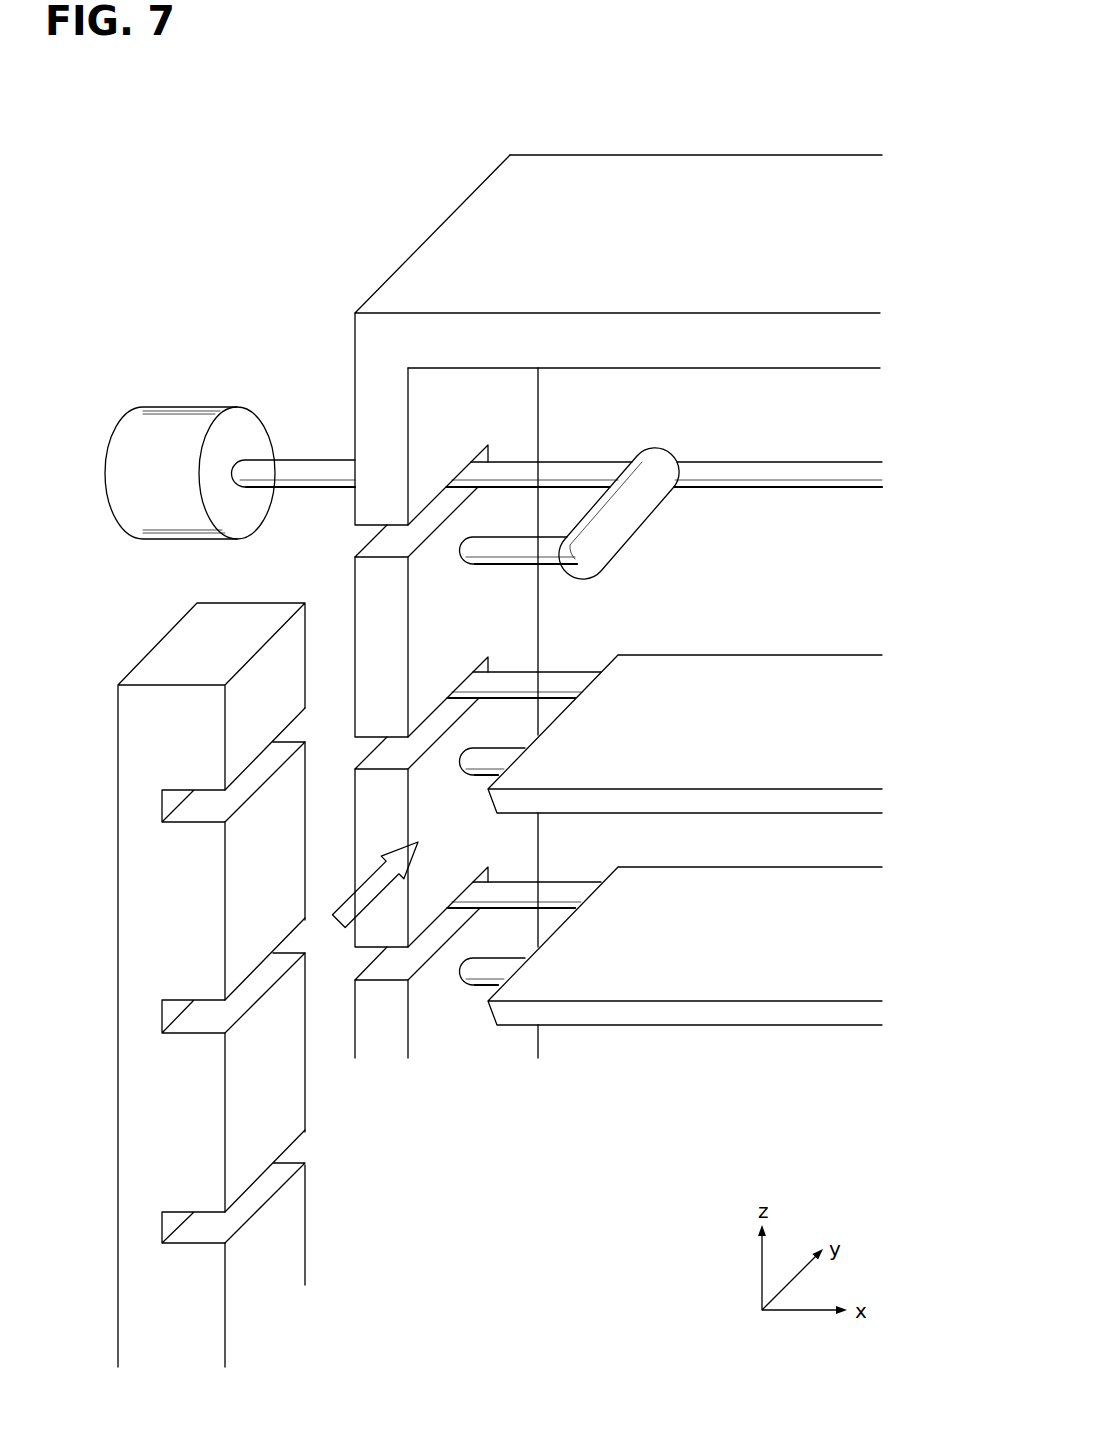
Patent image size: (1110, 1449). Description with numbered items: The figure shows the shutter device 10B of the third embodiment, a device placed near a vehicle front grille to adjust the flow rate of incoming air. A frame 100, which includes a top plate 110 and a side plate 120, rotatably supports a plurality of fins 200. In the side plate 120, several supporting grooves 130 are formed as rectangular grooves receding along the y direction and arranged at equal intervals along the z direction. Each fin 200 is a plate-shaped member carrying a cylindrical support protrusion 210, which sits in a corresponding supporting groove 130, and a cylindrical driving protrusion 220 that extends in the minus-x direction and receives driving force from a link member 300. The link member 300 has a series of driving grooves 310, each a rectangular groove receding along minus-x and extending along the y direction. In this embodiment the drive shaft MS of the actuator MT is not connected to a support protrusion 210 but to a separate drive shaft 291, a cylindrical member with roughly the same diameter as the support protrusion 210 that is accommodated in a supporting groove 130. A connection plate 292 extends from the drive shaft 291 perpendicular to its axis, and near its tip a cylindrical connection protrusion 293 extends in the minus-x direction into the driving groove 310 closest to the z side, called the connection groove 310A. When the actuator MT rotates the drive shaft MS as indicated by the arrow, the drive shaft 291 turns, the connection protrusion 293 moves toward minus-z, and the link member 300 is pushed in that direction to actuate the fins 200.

The shutter device 10B is at (376, 180).
The frame 100 is at (624, 150).
The top plate 110 is at (755, 178).
The side plate 120 is at (352, 387).
The supporting groove 130 is at (364, 536).
The fin 200 is at (763, 673).
The support protrusion 210 is at (562, 680).
The driving protrusion 220 is at (480, 772).
The drive shaft 291 is at (718, 465).
The connection plate 292 is at (632, 515).
The connection protrusion 293 is at (483, 552).
The link member 300 is at (180, 645).
The driving groove 310 is at (256, 903).
The connection groove 310A is at (298, 731).
The actuator MT is at (165, 407).
The drive shaft MS is at (253, 470).